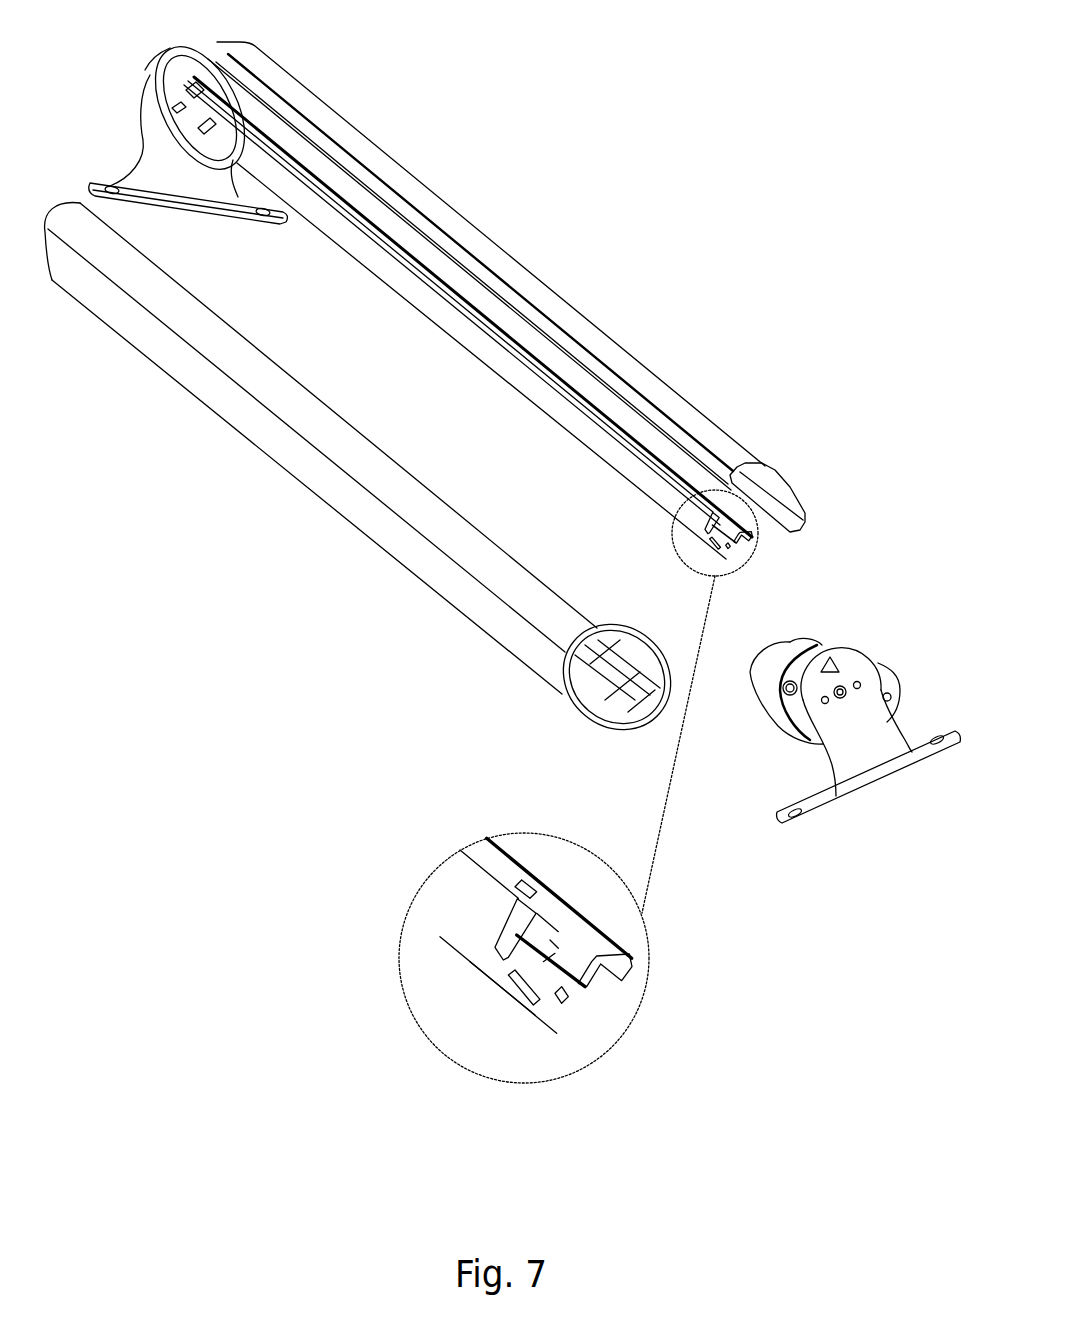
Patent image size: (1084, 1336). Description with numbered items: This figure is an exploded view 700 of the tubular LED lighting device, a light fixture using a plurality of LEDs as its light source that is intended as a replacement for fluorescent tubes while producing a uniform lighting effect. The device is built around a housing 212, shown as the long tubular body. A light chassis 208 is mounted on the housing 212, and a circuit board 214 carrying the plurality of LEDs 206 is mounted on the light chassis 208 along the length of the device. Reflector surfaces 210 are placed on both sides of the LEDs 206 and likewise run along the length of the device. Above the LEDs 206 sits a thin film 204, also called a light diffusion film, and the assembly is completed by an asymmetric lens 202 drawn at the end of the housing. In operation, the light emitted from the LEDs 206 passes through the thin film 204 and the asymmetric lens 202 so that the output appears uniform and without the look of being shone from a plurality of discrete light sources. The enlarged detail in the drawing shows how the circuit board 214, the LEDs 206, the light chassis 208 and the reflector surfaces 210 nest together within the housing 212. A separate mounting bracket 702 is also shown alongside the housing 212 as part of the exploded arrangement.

The mounting assembly 700 is at (812, 135).
The asymmetric lens 202 is at (788, 487).
The thin film 204 is at (585, 917).
The LEDs 206 is at (572, 970).
The light chassis 208 is at (490, 963).
The reflector surfaces 210 is at (545, 895).
The housing 212 is at (520, 632).
The circuit board 214 is at (513, 977).
The mounting bracket 702 is at (866, 760).